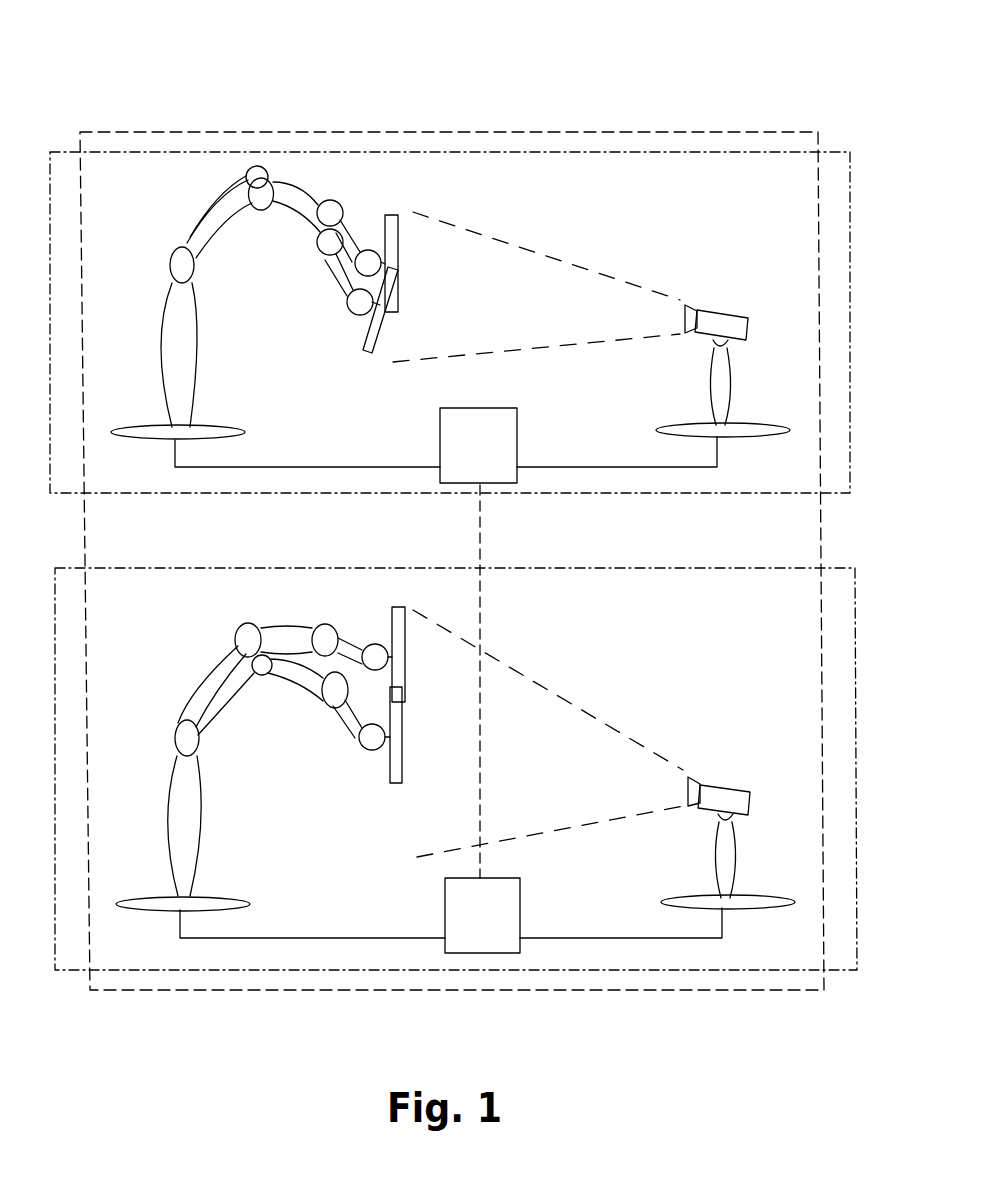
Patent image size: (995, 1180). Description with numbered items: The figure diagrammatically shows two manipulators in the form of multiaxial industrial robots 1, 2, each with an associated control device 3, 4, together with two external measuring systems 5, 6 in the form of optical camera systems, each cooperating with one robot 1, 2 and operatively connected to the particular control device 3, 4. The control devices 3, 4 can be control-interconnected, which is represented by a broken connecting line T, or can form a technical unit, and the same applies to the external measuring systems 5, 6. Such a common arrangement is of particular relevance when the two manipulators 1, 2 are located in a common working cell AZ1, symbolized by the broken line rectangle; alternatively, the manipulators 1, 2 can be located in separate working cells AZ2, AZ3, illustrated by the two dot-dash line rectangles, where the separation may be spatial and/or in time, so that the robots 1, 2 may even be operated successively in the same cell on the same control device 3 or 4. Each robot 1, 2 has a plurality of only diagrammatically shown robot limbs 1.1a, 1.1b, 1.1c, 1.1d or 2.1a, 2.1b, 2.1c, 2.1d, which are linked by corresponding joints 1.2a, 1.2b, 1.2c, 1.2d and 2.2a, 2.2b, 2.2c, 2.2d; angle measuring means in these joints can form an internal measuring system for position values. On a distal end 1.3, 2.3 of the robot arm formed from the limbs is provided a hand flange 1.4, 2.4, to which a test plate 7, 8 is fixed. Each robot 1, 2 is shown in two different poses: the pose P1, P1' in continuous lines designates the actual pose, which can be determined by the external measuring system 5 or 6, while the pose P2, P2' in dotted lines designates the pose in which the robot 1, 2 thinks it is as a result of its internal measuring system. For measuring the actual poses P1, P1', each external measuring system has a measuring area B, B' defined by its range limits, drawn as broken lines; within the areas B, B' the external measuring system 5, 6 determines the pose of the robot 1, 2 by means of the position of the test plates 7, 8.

The industrial robot 1 is at (295, 228).
The industrial robot 2 is at (330, 808).
The robot limb 1.1a is at (187, 387).
The robot limb 1.1b is at (210, 247).
The robot limb 1.1c is at (293, 207).
The robot limb 1.1d is at (365, 225).
The joint 1.2a is at (170, 265).
The joint 1.2b is at (259, 177).
The joint 1.2c is at (324, 253).
The joint 1.2d is at (357, 330).
The distal end 1.3 is at (425, 232).
The hand flange 1.4 is at (390, 356).
The robot limb 2.1a is at (190, 875).
The robot limb 2.1b is at (207, 695).
The robot limb 2.1c is at (290, 638).
The robot limb 2.1d is at (358, 645).
The joint 2.2a is at (175, 738).
The joint 2.2b is at (250, 660).
The joint 2.2c is at (322, 683).
The joint 2.2d is at (377, 653).
The distal end 2.3 is at (407, 819).
The hand flange 2.4 is at (388, 790).
The control device 3 is at (478, 408).
The control device 4 is at (500, 878).
The external measuring system 5 is at (725, 308).
The external measuring system 6 is at (728, 782).
The test plate 7 is at (400, 257).
The test plate 8 is at (405, 665).
The actual pose P1 is at (193, 132).
The assumed pose P2 is at (268, 269).
The actual pose P1' is at (320, 822).
The assumed pose P2' is at (157, 620).
The measuring area B is at (536, 287).
The measuring area B' is at (548, 733).
The connecting line T is at (480, 545).
The common working cell AZ1 is at (662, 130).
The separate working cell AZ2 is at (545, 150).
The separate working cell AZ3 is at (668, 970).